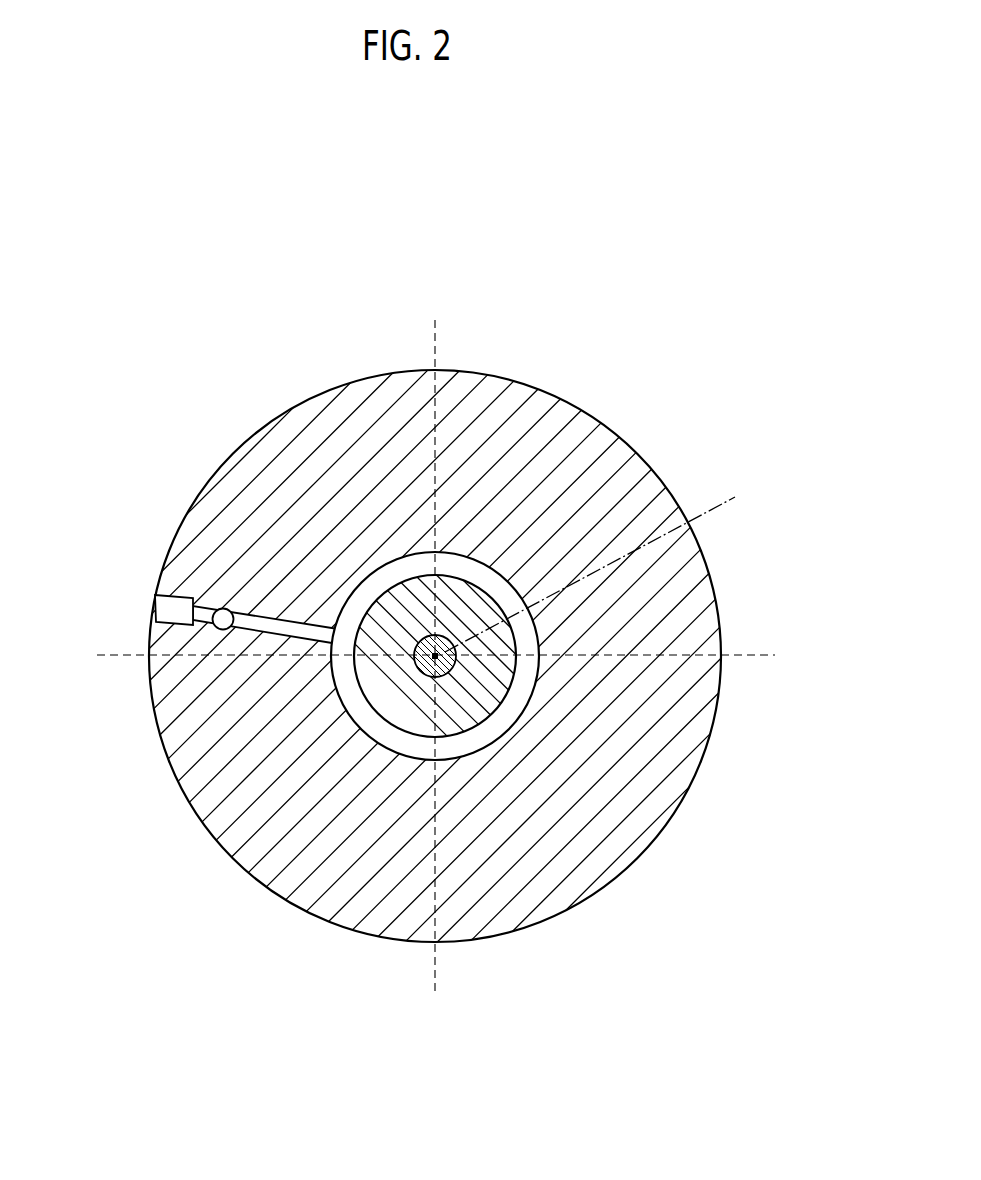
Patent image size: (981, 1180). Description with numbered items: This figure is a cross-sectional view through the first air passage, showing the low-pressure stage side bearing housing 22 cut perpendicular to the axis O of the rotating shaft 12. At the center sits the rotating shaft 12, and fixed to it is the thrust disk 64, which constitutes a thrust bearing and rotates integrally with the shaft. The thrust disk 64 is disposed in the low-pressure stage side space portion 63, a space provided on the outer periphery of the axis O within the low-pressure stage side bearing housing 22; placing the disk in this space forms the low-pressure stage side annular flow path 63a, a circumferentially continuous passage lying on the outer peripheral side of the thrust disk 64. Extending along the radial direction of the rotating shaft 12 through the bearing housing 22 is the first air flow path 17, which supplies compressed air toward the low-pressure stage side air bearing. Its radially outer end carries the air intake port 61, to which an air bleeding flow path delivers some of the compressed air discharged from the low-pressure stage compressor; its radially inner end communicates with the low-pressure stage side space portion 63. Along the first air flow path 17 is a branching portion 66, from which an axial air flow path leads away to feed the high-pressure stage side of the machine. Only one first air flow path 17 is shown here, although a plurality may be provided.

The low-pressure stage side bearing housing 22 is at (352, 373).
The first air flow path 17 is at (285, 610).
The air intake port 61 is at (167, 609).
The branching portion 66 is at (223, 608).
The low-pressure stage side space portion 63 is at (337, 703).
The low-pressure stage side annular flow path 63a is at (482, 733).
The thrust disk 64 is at (468, 597).
The rotating shaft 12 is at (453, 663).
The axis O is at (600, 566).